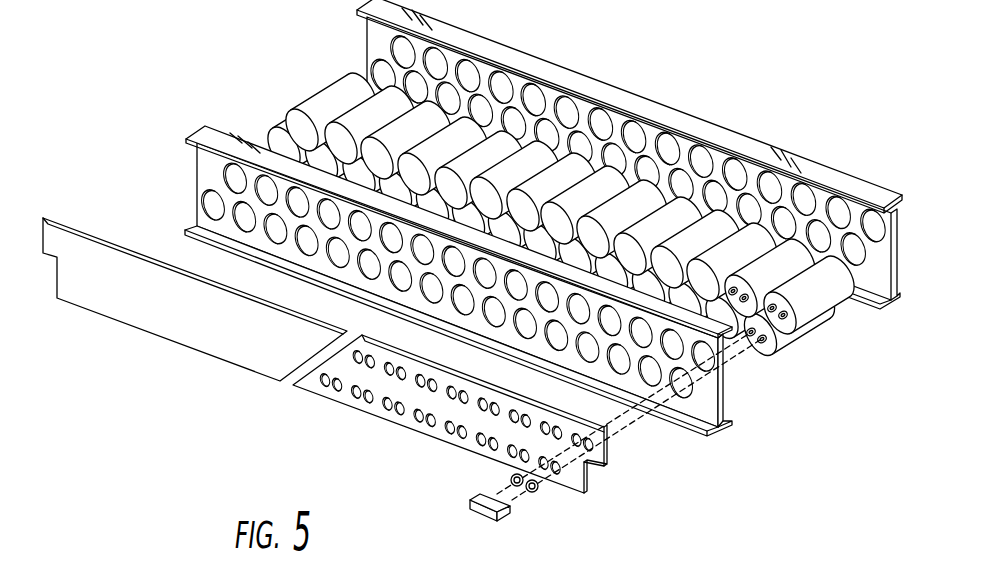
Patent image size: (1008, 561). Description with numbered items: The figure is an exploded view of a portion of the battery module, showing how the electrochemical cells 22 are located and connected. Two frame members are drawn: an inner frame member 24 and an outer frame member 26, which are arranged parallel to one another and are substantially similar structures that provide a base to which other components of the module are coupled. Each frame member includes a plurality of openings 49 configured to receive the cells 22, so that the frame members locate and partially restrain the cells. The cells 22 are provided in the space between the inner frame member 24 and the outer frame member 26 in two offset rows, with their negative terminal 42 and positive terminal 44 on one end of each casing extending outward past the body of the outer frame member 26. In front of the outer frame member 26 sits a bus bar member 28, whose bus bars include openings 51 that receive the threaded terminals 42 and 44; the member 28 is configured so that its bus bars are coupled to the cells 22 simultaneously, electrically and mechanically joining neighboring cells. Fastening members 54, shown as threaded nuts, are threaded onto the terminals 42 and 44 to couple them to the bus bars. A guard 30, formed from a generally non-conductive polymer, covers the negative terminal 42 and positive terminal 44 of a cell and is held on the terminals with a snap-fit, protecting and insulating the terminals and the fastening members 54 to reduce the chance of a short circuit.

The electrochemical cell 22 is at (787, 330).
The inner frame member 24 is at (722, 146).
The outer frame member 26 is at (429, 269).
The bus bar member 28 is at (456, 437).
The guard 30 is at (490, 516).
The negative terminal 42 is at (747, 336).
The positive terminal 44 is at (765, 343).
The opening 49 is at (222, 176).
The opening 51 is at (512, 447).
The fastening member 54 is at (535, 490).